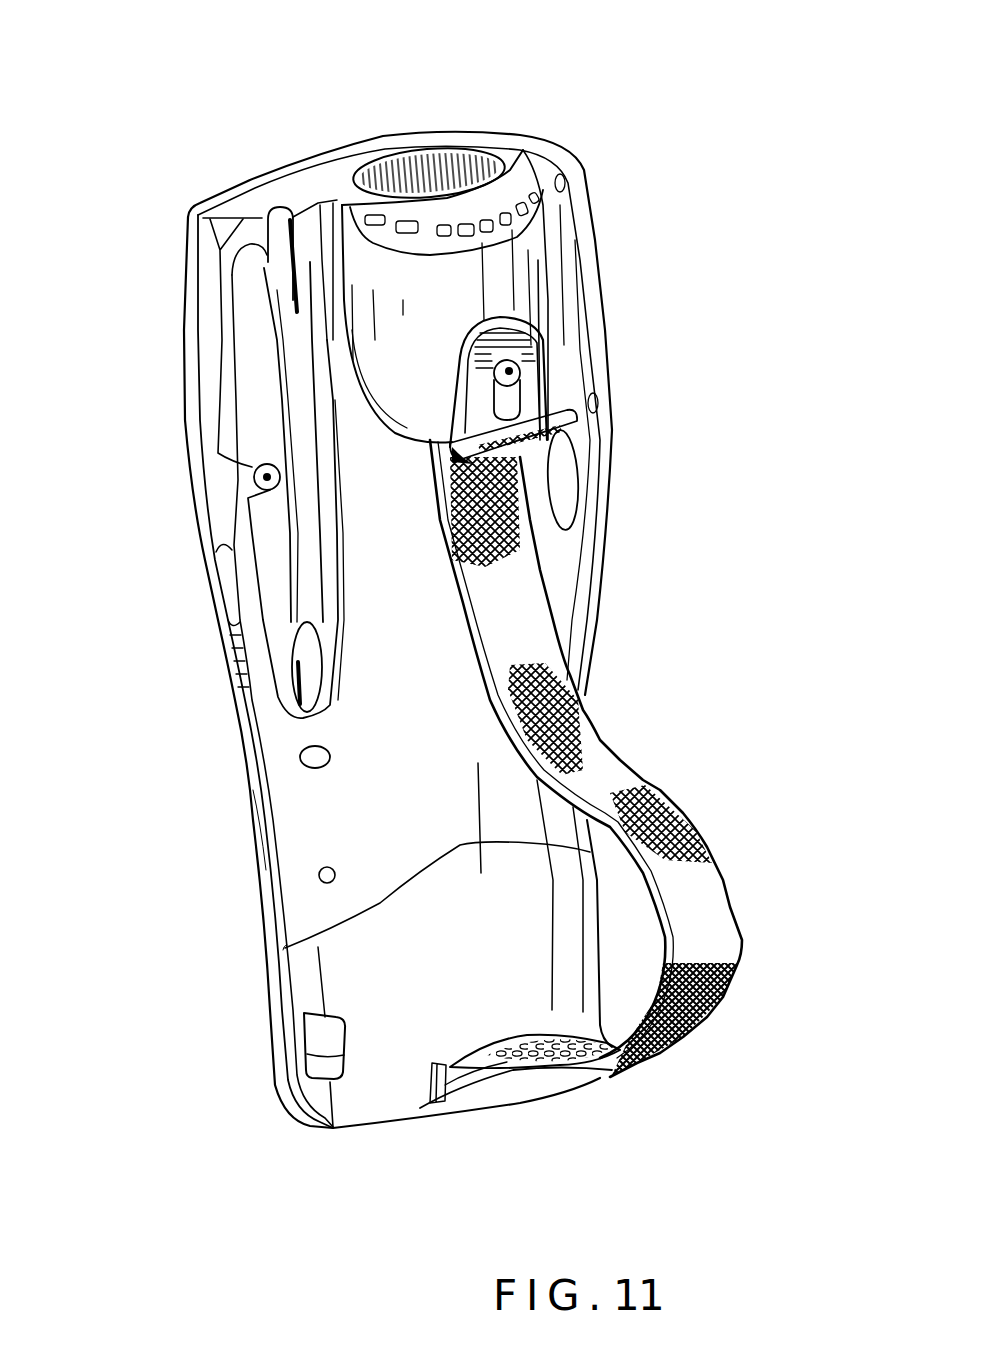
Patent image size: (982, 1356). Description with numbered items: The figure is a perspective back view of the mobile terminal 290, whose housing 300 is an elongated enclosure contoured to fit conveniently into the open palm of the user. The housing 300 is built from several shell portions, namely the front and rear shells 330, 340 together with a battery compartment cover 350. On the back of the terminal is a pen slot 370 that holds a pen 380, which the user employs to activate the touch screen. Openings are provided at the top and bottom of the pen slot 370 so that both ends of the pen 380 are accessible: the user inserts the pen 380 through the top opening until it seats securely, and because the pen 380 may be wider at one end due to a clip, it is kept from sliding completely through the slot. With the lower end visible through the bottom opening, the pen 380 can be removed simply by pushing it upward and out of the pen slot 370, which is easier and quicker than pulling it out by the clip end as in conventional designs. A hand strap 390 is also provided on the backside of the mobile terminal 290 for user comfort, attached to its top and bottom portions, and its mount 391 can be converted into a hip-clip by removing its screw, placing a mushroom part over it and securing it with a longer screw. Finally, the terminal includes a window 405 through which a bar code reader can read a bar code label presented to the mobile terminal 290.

The mobile terminal 290 is at (480, 62).
The housing 300 is at (592, 372).
The window 405 is at (413, 168).
The pen 380 is at (186, 222).
The pen slot 370 is at (260, 375).
The hand strap mount 391 is at (548, 323).
The hand strap 390 is at (705, 928).
The front shell 330 is at (252, 817).
The rear shell 340 is at (297, 902).
The battery compartment cover 350 is at (338, 988).